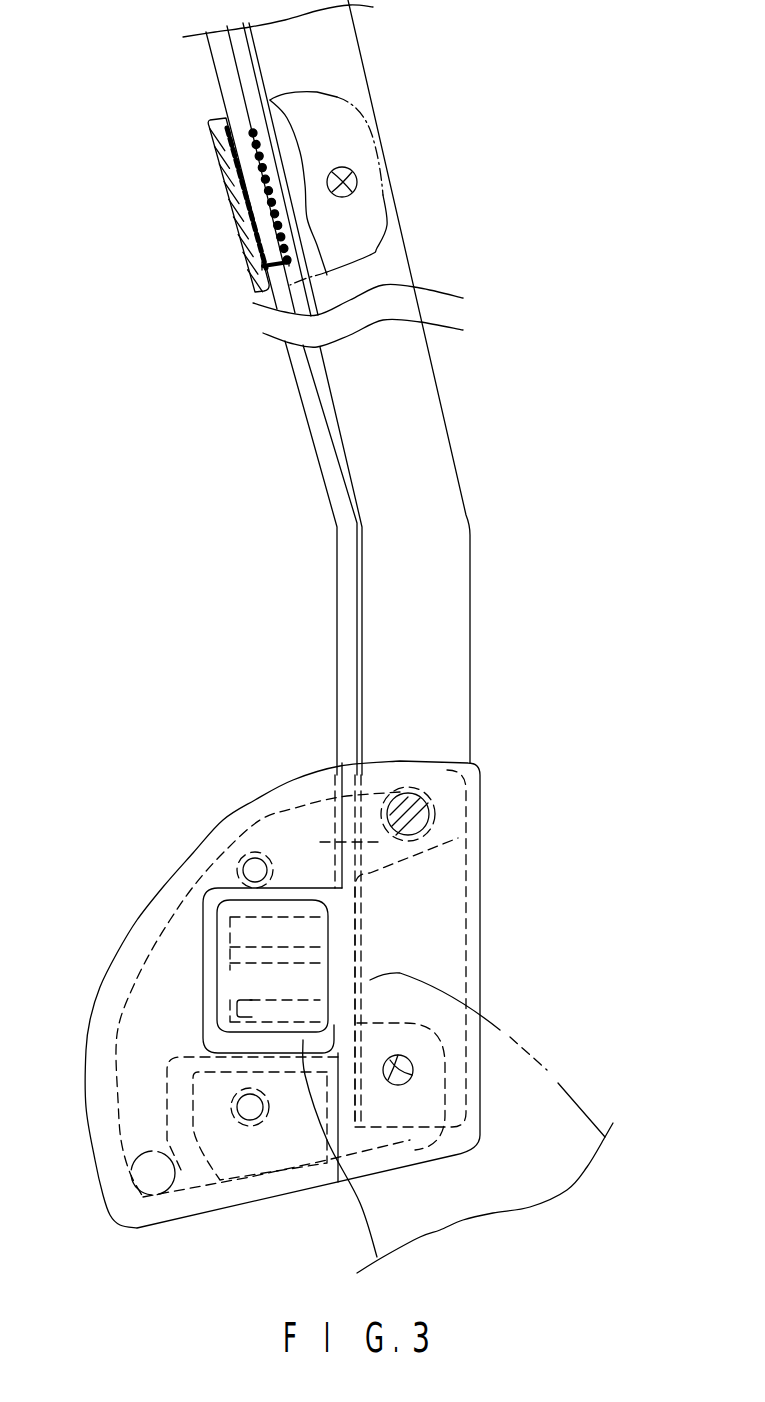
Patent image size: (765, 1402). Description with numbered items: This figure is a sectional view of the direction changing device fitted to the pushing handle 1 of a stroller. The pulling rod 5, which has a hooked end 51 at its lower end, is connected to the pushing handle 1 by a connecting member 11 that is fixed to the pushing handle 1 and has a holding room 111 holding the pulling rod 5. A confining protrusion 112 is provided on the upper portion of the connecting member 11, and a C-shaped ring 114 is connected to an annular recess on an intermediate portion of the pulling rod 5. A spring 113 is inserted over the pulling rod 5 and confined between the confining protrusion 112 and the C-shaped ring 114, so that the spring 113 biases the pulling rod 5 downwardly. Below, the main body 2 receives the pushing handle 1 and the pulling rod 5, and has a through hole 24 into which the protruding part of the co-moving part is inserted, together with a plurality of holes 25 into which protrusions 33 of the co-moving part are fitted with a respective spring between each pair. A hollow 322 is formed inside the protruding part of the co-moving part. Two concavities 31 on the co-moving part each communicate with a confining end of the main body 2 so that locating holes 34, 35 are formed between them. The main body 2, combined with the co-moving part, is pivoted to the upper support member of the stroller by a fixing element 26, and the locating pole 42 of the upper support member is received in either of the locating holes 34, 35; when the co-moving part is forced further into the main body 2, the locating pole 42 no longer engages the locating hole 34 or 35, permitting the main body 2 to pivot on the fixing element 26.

The pushing handle 1 is at (433, 428).
The main body 2 is at (473, 930).
The pulling rod 5 is at (330, 457).
The connecting member 11 is at (337, 130).
The holding room 111 is at (277, 202).
The confining protrusion 112 is at (223, 120).
The spring 113 is at (243, 200).
The C-shaped ring 114 is at (277, 270).
The through hole 24 is at (215, 1012).
The holes 25 is at (263, 970).
The protrusions 33 is at (255, 852).
The fixing element 26 is at (420, 1070).
The concavities 31 is at (396, 796).
The hollow 322 is at (255, 950).
The locating hole 34 is at (437, 827).
The locating hole 35 is at (167, 1192).
The locating pole 42 is at (506, 813).
The hooked end 51 is at (260, 987).